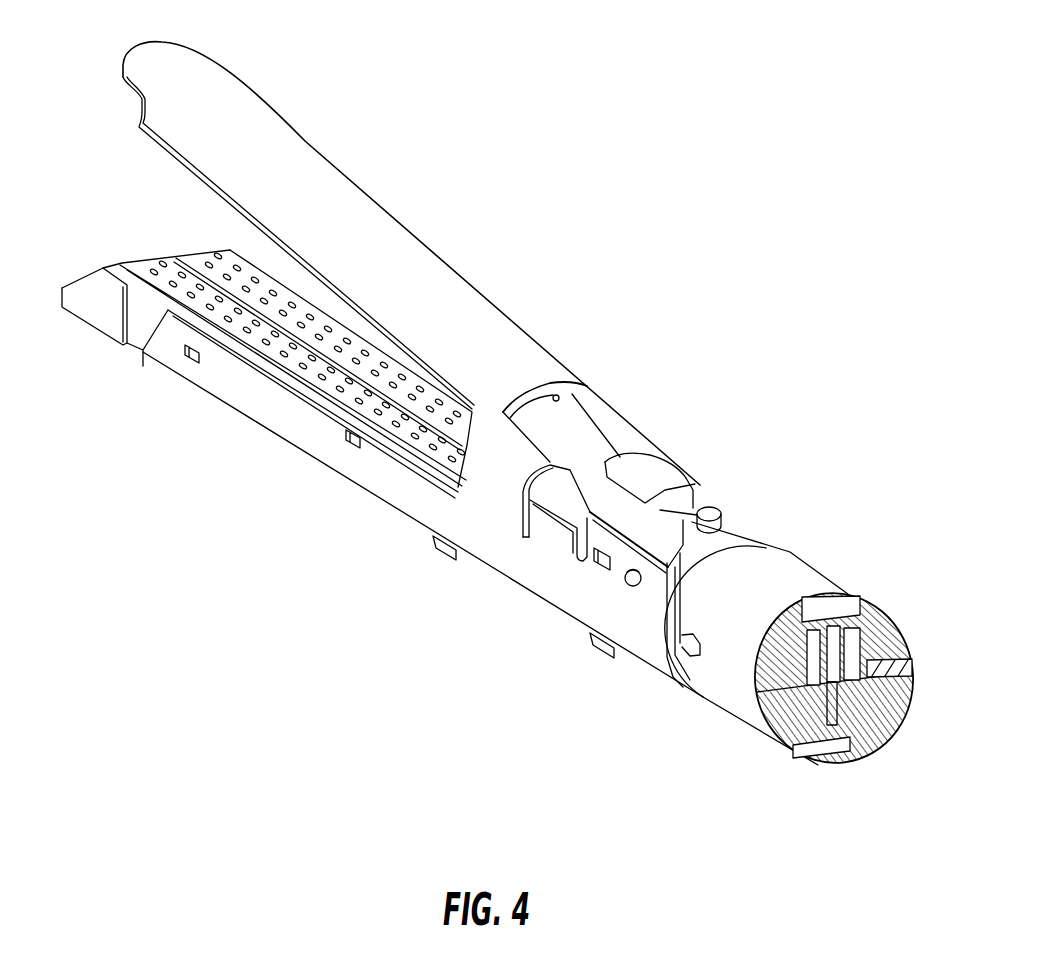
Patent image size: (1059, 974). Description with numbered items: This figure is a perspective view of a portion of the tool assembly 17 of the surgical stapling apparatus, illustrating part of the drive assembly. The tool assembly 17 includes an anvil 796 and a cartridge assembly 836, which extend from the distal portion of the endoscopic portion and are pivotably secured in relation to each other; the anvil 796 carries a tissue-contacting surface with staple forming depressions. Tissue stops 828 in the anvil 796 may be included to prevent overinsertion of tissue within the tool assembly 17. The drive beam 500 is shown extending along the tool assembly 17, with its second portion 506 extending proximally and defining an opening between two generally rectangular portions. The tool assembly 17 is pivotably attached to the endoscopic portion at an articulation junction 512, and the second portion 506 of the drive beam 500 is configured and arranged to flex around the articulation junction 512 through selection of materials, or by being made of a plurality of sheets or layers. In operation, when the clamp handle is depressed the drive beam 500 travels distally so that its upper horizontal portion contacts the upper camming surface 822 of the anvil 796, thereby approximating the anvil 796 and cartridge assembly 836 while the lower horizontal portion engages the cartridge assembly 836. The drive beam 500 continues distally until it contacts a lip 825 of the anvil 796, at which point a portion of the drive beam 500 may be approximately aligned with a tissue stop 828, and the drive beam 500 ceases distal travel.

The tool assembly 17 is at (422, 131).
The anvil 796 is at (377, 223).
The cartridge assembly 836 is at (240, 400).
The lip 825 is at (555, 394).
The upper camming surface 822 is at (524, 500).
The tissue stop 828 is at (497, 502).
The drive beam 500 is at (673, 483).
The articulation junction 512 is at (670, 660).
The second portion 506 is at (873, 720).